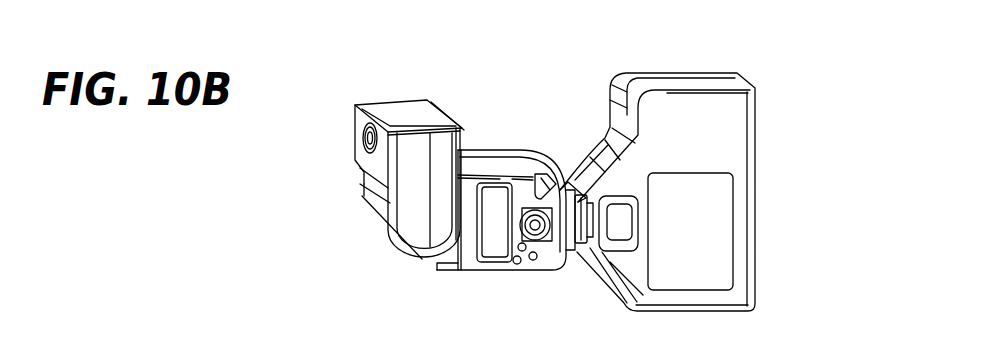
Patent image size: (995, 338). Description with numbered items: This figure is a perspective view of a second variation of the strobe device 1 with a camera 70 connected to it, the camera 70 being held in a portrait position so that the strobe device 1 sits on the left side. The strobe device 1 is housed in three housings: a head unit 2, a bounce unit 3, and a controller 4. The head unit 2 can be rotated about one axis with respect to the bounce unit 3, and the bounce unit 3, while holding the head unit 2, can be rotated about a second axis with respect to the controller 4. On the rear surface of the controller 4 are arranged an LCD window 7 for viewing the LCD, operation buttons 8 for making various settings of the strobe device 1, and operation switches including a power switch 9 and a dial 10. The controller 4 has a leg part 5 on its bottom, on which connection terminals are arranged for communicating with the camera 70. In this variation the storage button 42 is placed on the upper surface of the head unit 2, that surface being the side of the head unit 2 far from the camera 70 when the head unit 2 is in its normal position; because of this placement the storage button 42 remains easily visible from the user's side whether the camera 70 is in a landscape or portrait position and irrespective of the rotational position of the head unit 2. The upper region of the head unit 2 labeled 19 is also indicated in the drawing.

The strobe device 1 is at (389, 269).
The head unit 2 is at (363, 169).
The bounce unit 3 is at (374, 216).
The controller 4 is at (492, 275).
The leg part 5 is at (588, 234).
The LCD window 7 is at (483, 252).
The operation buttons 8 is at (527, 263).
The power switch 9 is at (543, 192).
The dial 10 is at (535, 228).
The top surface of flash head 19 is at (397, 108).
The storage button 42 is at (363, 139).
The camera 70 is at (666, 106).